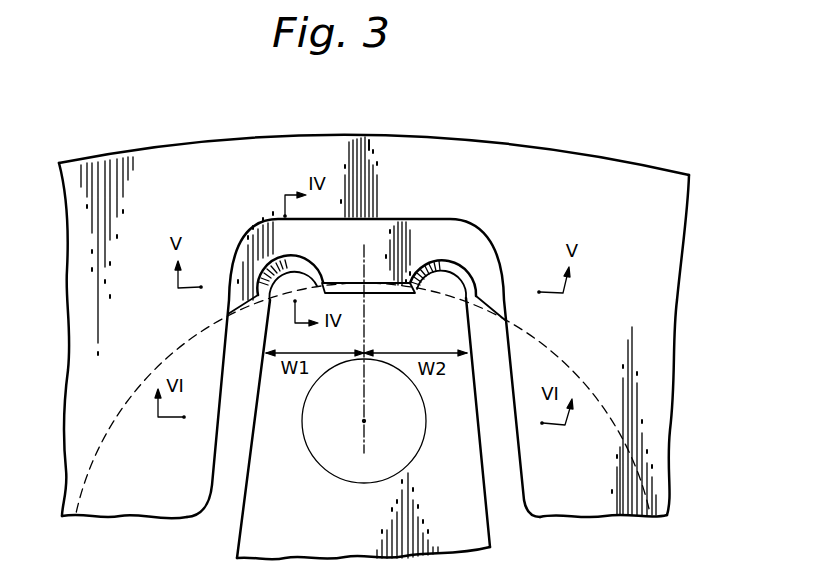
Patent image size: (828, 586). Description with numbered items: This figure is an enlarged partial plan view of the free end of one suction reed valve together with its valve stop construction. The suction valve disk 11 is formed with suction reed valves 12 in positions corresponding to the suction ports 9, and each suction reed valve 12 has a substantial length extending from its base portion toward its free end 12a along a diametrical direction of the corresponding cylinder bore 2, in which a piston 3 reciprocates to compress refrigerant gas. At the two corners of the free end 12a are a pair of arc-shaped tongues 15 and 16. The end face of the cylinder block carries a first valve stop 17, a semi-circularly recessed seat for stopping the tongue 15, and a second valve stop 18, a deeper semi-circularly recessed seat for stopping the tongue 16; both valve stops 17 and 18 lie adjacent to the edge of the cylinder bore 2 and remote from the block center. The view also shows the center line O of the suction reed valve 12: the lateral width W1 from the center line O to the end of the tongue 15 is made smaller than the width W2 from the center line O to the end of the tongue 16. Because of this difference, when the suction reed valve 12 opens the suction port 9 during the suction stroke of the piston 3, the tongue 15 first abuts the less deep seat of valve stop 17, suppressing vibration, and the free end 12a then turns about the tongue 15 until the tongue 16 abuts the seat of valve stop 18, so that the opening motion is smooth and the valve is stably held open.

The cylinder bore 2 is at (250, 308).
The piston 3 is at (552, 356).
The suction port 9 is at (345, 473).
The suction valve disk 11 is at (522, 153).
The suction reed valve 12 is at (473, 480).
The free end 12a is at (378, 322).
The tongue 15 is at (303, 282).
The tongue 16 is at (448, 287).
The valve stop 17 is at (273, 263).
The valve stop 18 is at (435, 273).
The center line O is at (363, 447).